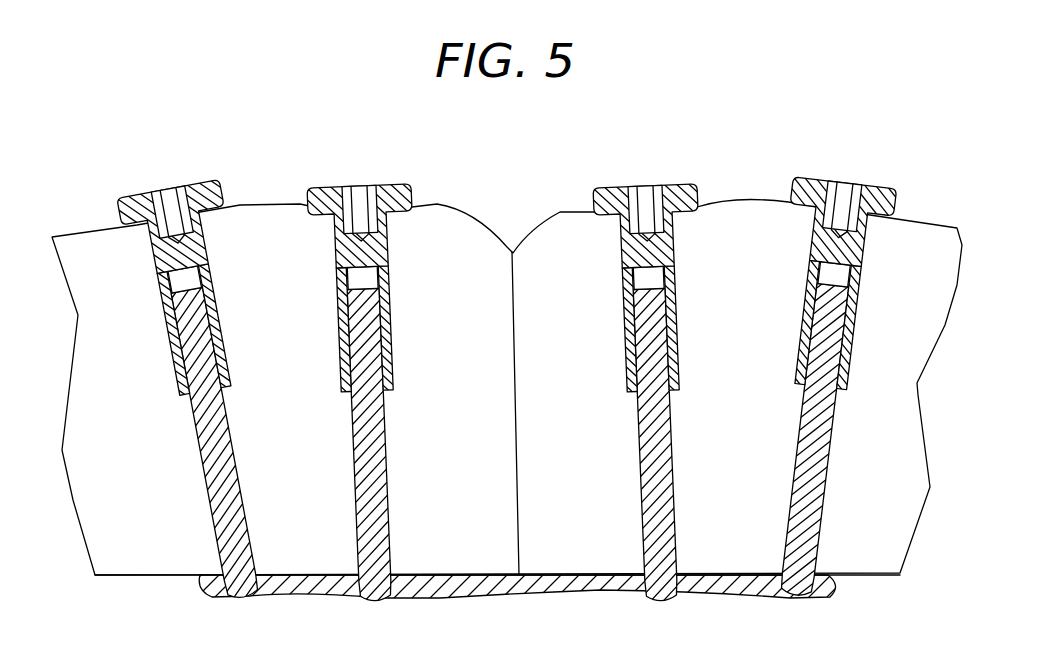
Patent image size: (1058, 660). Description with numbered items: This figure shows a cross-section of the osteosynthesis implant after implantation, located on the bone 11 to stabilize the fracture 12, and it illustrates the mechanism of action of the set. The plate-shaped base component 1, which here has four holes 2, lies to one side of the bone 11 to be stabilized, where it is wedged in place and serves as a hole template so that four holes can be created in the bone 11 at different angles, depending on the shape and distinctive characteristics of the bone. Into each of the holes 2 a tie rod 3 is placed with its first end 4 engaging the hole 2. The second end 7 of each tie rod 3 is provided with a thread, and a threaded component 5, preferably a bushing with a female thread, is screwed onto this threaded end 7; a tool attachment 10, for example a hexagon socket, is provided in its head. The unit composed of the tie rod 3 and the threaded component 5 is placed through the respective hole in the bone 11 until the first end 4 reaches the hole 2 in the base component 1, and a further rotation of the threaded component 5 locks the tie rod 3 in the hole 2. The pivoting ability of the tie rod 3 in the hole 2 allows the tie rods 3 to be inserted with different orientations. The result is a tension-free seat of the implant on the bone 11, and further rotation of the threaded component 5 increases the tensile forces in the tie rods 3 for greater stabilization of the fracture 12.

The base component 1 is at (330, 595).
The hole 2 is at (806, 586).
The tie rod 3 is at (222, 512).
The first end 4 is at (671, 600).
The threaded component 5 is at (392, 186).
The second end 7 is at (208, 306).
The tool attachment 10 is at (172, 199).
The bone 11 is at (746, 235).
The fracture 12 is at (510, 275).